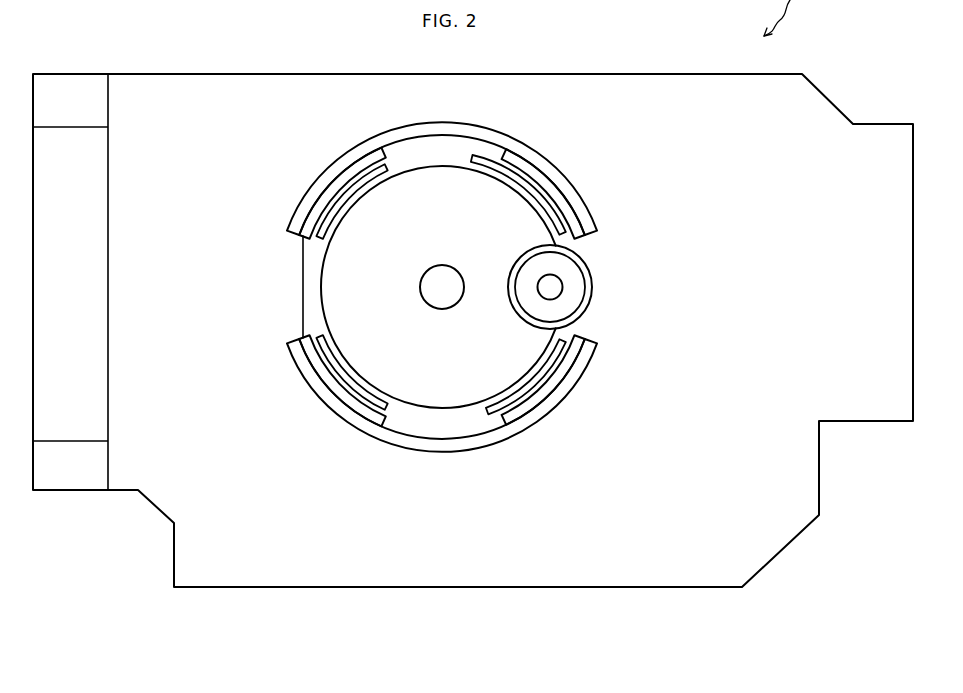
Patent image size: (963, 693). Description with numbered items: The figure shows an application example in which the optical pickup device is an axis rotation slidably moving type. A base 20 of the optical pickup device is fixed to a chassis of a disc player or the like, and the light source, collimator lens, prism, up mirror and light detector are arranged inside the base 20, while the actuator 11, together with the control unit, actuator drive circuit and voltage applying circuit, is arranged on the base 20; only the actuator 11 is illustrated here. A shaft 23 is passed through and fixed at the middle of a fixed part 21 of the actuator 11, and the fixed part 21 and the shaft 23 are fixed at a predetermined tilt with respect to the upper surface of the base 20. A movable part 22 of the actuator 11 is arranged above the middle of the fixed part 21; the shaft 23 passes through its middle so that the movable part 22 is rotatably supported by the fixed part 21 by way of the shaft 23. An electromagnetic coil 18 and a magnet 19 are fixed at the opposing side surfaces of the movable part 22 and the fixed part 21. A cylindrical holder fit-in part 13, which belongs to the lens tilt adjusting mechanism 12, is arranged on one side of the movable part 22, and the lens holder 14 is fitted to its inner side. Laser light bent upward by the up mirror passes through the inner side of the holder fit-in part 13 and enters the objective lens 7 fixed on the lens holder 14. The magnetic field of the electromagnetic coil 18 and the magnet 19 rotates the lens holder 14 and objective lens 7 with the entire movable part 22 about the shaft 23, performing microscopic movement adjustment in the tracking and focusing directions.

The objective lens 7 is at (563, 287).
The actuator 11 is at (615, 145).
The lens tilt adjusting mechanism 12 is at (518, 238).
The holder fit-in part 13 is at (514, 270).
The lens holder 14 is at (568, 297).
The electromagnetic coil 18 is at (363, 187).
The magnet 19 is at (340, 186).
The base 20 is at (528, 74).
The fixed part 21 is at (302, 270).
The movable part 22 is at (320, 288).
The shaft 23 is at (420, 287).